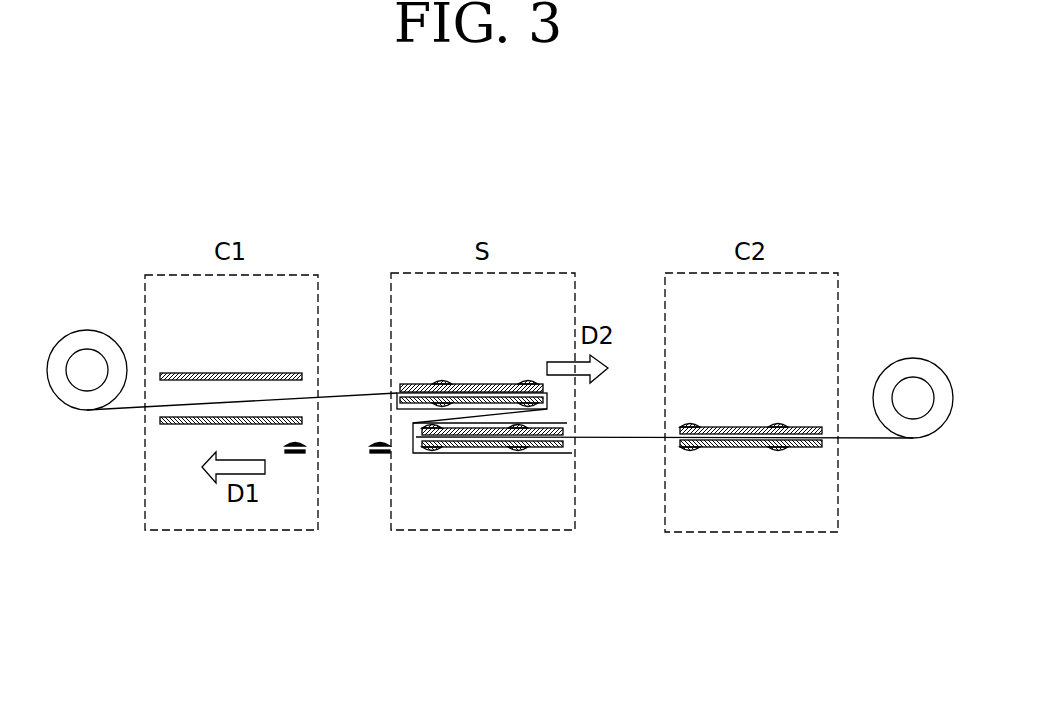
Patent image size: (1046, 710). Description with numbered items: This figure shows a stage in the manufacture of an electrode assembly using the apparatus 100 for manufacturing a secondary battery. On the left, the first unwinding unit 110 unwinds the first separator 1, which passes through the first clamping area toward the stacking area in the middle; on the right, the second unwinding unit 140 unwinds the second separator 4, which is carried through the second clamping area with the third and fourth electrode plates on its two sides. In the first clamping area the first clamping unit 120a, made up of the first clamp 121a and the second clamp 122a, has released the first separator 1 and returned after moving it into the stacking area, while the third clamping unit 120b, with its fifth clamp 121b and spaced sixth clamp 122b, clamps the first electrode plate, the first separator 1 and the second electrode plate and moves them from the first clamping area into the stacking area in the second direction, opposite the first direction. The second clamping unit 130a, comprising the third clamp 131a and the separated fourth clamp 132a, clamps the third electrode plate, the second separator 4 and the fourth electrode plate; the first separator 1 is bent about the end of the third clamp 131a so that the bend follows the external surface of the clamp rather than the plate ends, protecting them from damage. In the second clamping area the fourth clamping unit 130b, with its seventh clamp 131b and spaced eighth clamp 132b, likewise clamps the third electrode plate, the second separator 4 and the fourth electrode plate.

The apparatus for manufacturing a secondary battery 100 is at (394, 210).
The first unwinding unit 110 is at (88, 323).
The second unwinding unit 140 is at (915, 357).
The first separator 1 is at (127, 411).
The second separator 4 is at (868, 440).
The first clamping unit 120a is at (285, 575).
The first clamp 121a is at (378, 455).
The second clamp 122a is at (293, 455).
The third clamping unit 120b is at (447, 325).
The fifth clamp 121b is at (528, 378).
The sixth clamp 122b is at (442, 378).
The second clamping unit 130a is at (457, 585).
The third clamp 131a is at (432, 453).
The fourth clamp 132a is at (518, 453).
The fourth clamping unit 130b is at (778, 346).
The seventh clamp 131b is at (692, 425).
The eighth clamp 132b is at (778, 425).